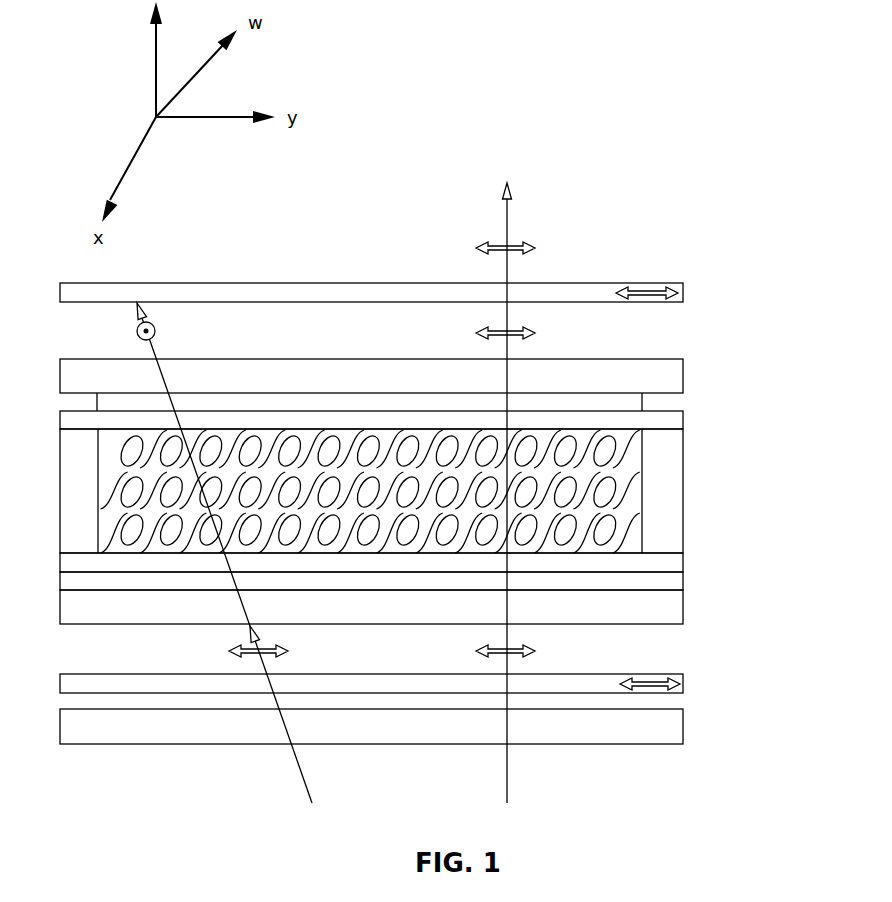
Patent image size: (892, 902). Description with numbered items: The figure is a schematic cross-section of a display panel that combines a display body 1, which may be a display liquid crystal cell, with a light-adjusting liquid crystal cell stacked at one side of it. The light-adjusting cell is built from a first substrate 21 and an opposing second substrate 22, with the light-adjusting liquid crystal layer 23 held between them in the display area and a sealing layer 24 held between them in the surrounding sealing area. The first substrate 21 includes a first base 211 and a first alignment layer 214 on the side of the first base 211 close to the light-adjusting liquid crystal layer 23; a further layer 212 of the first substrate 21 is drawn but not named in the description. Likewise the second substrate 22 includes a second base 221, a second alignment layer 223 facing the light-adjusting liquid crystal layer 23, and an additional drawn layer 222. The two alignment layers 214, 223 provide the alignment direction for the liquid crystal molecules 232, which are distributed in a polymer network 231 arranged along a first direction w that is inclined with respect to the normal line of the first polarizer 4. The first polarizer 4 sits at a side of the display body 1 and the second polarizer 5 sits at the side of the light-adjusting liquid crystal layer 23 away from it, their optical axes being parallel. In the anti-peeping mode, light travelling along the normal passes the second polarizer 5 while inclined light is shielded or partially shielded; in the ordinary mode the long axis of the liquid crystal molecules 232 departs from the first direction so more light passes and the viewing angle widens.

The display body 1 is at (662, 732).
The first polarizer 4 is at (684, 286).
The second polarizer 5 is at (684, 678).
The first substrate 21 is at (433, 396).
The first base 211 is at (670, 375).
The first electrode layer 212 is at (632, 403).
The first alignment layer 214 is at (665, 422).
The second substrate 22 is at (429, 585).
The second base 221 is at (663, 610).
The second electrode layer 222 is at (660, 580).
The second alignment layer 223 is at (660, 560).
The light-adjusting liquid crystal layer 23 is at (440, 491).
The polymer network 231 is at (626, 493).
The liquid crystal molecules 232 is at (611, 523).
The sealing layer 24 is at (672, 463).